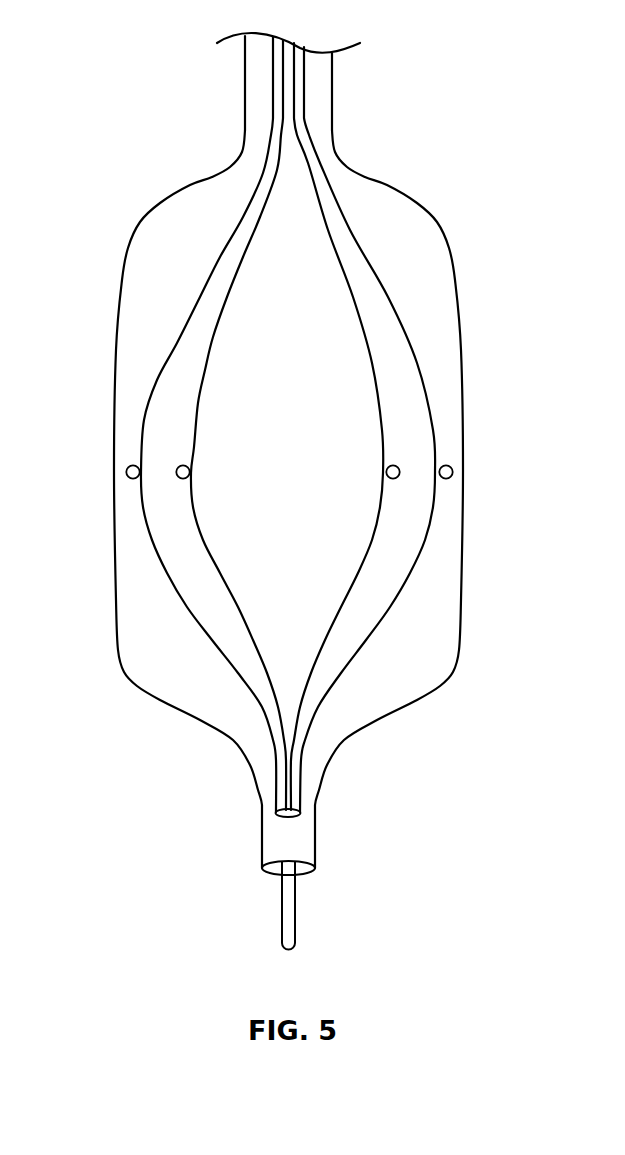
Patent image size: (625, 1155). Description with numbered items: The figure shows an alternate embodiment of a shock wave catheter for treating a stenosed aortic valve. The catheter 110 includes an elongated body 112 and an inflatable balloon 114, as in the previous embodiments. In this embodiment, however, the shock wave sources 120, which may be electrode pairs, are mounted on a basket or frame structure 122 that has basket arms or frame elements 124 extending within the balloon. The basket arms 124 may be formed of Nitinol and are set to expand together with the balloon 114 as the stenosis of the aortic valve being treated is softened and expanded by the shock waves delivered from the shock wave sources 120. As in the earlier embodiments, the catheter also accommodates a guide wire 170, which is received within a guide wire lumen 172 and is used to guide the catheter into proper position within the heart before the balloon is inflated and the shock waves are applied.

The catheter 110 is at (291, 493).
The elongated body 112 is at (333, 98).
The inflatable balloon 114 is at (448, 238).
The shock wave sources 120 is at (176, 472).
The basket or frame structure 122 is at (416, 316).
The basket arms 124 is at (220, 338).
The guide wire 170 is at (280, 921).
The guide wire lumen 172 is at (303, 870).